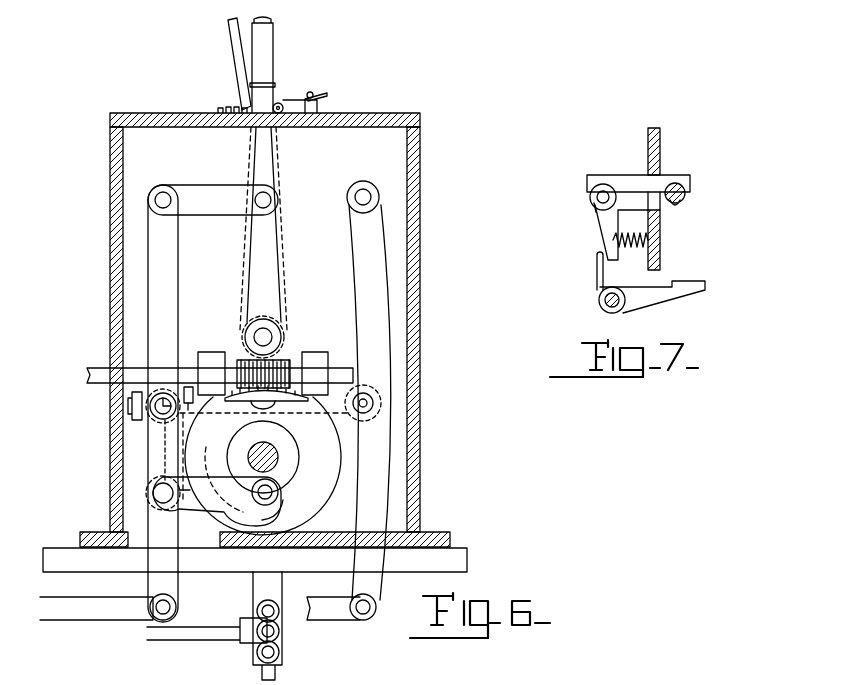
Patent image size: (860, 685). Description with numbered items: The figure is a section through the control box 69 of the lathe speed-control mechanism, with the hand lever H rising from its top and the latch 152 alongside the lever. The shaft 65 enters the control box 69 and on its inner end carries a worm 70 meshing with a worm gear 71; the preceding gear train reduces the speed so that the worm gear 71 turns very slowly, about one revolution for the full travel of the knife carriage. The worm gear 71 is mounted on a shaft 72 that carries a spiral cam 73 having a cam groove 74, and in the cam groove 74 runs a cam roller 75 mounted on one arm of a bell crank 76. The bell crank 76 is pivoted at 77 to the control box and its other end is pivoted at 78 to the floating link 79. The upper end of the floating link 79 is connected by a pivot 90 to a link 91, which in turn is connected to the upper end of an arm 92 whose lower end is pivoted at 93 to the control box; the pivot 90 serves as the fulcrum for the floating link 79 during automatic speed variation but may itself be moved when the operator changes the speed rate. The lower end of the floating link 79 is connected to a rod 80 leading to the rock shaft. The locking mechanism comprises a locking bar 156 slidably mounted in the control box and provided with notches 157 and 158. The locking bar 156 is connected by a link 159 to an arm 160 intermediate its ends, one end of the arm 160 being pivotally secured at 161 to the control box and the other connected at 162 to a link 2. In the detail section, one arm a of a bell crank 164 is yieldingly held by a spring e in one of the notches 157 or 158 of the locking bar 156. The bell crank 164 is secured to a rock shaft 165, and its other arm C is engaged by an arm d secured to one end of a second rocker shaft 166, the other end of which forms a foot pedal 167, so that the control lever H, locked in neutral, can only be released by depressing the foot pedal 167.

In FIG. 6, the control box 69 is at (418, 137).
In FIG. 6, the hand lever H is at (267, 33).
In FIG. 6, the latch 152 is at (235, 50).
In FIG. 6, the arm 92 is at (270, 256).
In FIG. 6, the pivot 93 is at (266, 330).
In FIG. 6, the link 91 is at (197, 193).
In FIG. 6, the pivot 90 is at (160, 200).
In FIG. 6, the floating link 79 is at (158, 292).
In FIG. 6, the pivot 161 is at (378, 204).
In FIG. 6, the arm 160 is at (381, 308).
In FIG. 6, the connection 162 is at (373, 620).
In FIG. 6, the link 159 is at (345, 412).
In FIG. 6, the shaft 65 is at (88, 375).
In FIG. 6, the worm 70 is at (268, 362).
In FIG. 6, the worm gear 71 is at (293, 388).
In FIG. 6, the arm a is at (188, 386).
In FIG. 7, the arm a is at (676, 175).
In FIG. 6, the locking bar 156 is at (130, 403).
In FIG. 7, the locking bar 156 is at (672, 205).
In FIG. 6, the pivot 78 is at (153, 419).
In FIG. 6, the notch 157 is at (188, 410).
In FIG. 7, the notch 157 is at (687, 205).
In FIG. 6, the spiral cam 73 is at (327, 477).
In FIG. 6, the cam groove 74 is at (300, 447).
In FIG. 6, the bell crank 76 is at (188, 512).
In FIG. 6, the notch 158 is at (200, 479).
In FIG. 6, the shaft 72 is at (269, 464).
In FIG. 6, the cam roller 75 is at (276, 501).
In FIG. 6, the pivot 77 is at (151, 501).
In FIG. 6, the rod 80 is at (70, 616).
In FIG. 6, the link 2 is at (327, 612).
In FIG. 7, the rock shaft 165 is at (601, 192).
In FIG. 7, the bell crank 164 is at (594, 205).
In FIG. 7, the arm C is at (599, 224).
In FIG. 7, the arm d is at (600, 275).
In FIG. 7, the spring e is at (637, 249).
In FIG. 7, the rocker shaft 166 is at (600, 302).
In FIG. 7, the foot pedal 167 is at (683, 295).